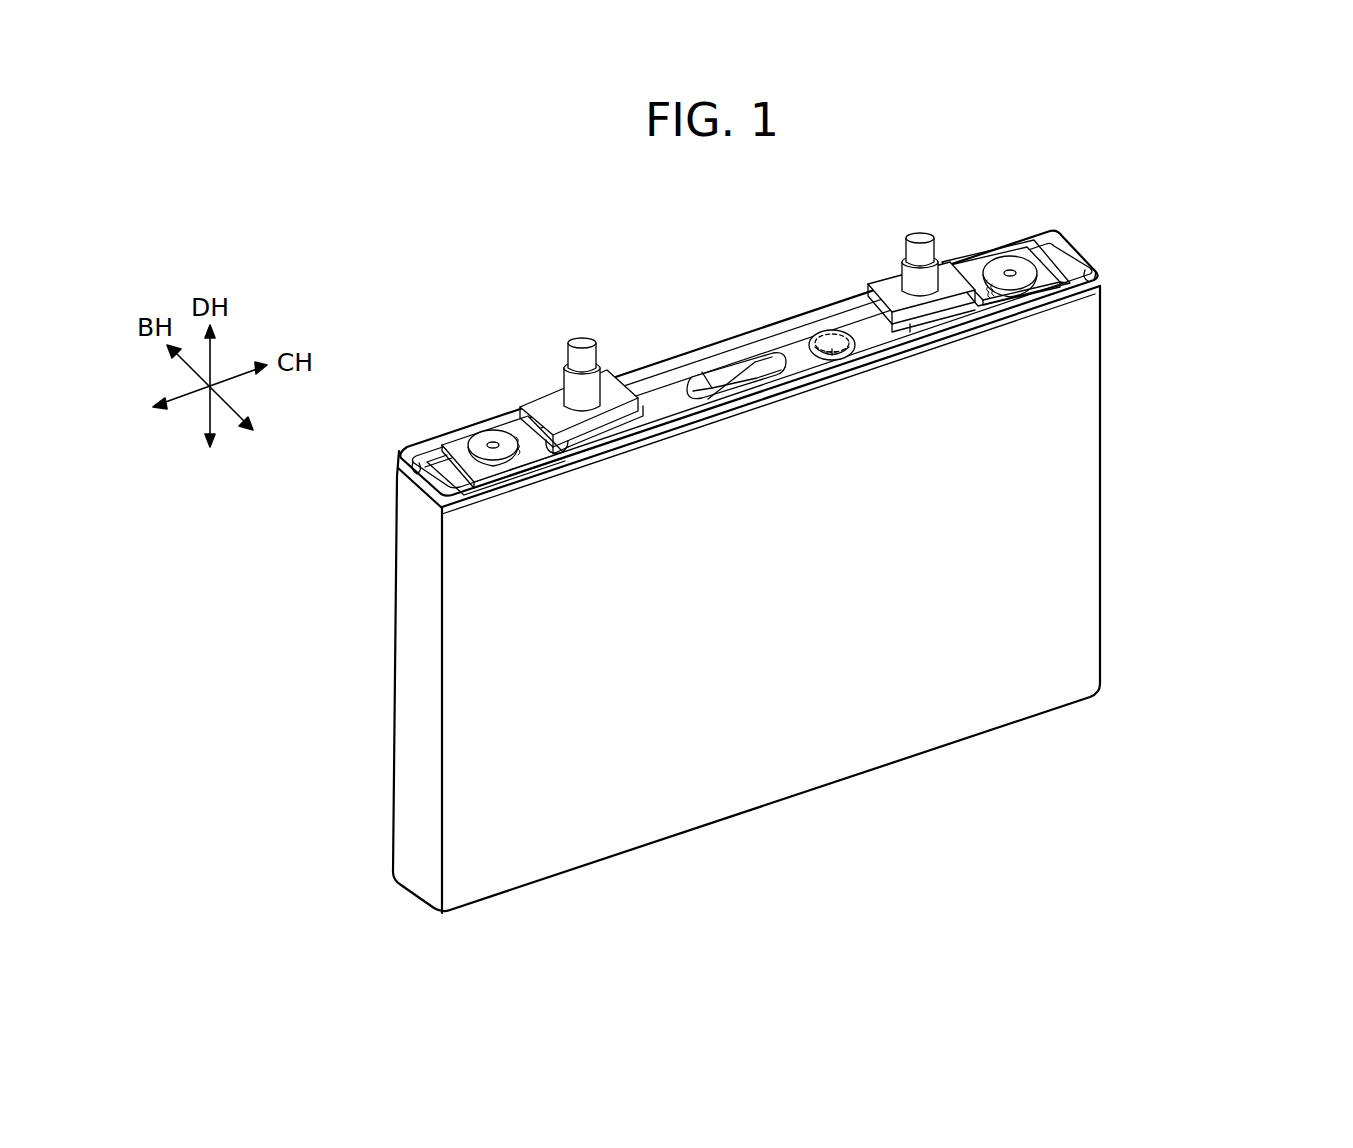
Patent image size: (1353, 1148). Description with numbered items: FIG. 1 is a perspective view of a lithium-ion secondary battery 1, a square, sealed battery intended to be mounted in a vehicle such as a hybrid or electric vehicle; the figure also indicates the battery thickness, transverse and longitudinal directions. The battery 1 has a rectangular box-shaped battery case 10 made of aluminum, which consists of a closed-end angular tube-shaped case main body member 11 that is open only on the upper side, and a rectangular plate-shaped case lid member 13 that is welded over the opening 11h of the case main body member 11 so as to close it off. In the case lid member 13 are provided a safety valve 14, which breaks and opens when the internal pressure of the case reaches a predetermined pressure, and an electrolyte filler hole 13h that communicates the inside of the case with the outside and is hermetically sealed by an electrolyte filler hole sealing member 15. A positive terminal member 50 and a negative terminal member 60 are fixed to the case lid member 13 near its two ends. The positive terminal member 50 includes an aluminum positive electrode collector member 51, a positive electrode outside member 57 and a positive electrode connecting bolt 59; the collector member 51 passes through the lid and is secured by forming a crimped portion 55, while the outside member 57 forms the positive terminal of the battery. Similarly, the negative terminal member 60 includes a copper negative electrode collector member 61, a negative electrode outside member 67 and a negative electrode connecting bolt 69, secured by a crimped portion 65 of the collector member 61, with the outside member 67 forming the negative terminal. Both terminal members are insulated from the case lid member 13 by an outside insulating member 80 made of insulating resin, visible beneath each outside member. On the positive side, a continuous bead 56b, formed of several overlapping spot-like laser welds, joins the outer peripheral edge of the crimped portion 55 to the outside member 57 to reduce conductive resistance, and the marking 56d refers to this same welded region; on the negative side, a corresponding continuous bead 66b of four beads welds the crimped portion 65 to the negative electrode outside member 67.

The battery 1 is at (777, 551).
The battery case 10 is at (777, 551).
The case main body member 11 is at (1072, 545).
The opening 11h is at (399, 456).
The case lid member 13 is at (704, 369).
The electrolyte filler hole 13h is at (822, 338).
The safety valve 14 is at (720, 382).
The electrolyte filler hole sealing member 15 is at (700, 365).
The positive terminal member 50 is at (780, 367).
The positive electrode collector member 51 is at (1045, 261).
The crimped portion 55 is at (1094, 284).
The continuous bead 56b is at (1114, 317).
The caulked portion serration 56d is at (990, 296).
The positive electrode outside member 57 is at (1100, 273).
The positive electrode connecting bolt 59 is at (920, 240).
The negative terminal member 60 is at (546, 418).
The negative electrode collector member 61 is at (475, 440).
The crimped portion 65 is at (472, 426).
The continuous bead 66b is at (551, 445).
The negative electrode outside member 67 is at (537, 418).
The negative electrode connecting bolt 69 is at (583, 338).
The outside insulating member 80 is at (875, 323).